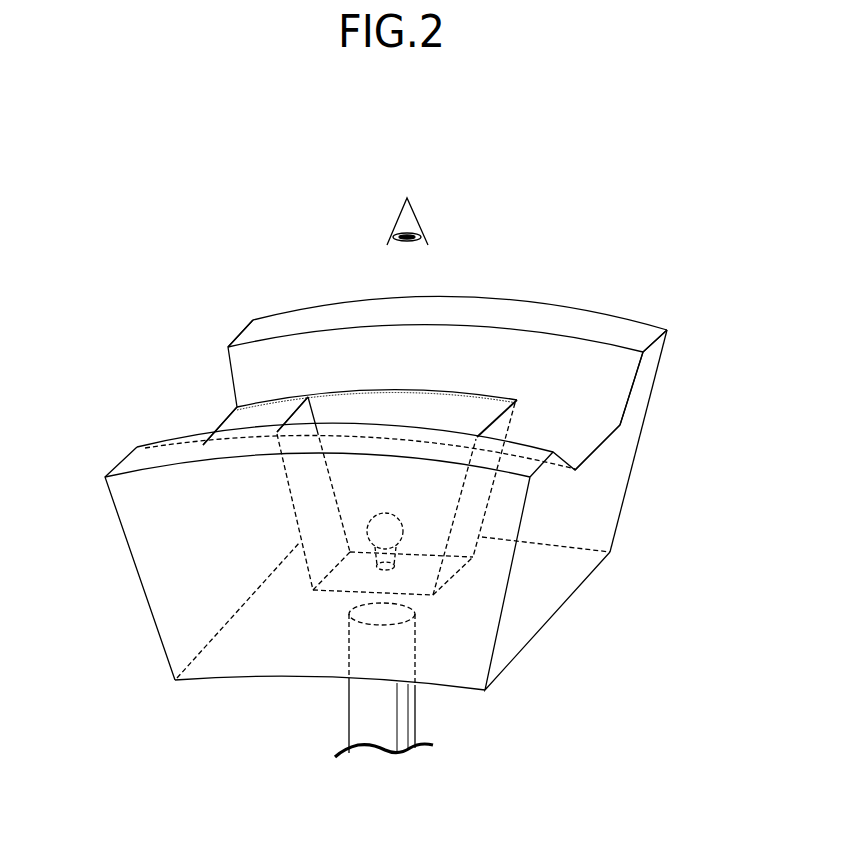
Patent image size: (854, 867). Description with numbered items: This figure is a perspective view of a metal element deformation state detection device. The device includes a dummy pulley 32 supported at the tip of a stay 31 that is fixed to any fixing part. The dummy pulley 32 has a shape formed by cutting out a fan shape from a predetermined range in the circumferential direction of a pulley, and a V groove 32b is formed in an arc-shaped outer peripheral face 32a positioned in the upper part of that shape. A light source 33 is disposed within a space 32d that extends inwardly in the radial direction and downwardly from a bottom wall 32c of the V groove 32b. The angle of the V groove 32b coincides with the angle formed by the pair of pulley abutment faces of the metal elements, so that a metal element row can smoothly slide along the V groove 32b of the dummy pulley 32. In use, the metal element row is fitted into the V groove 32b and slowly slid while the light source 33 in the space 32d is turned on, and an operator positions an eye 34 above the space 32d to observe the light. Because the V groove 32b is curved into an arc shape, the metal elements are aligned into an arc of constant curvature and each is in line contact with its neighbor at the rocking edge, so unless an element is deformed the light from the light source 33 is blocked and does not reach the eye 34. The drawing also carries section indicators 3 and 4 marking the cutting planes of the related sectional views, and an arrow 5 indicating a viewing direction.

The stay 31 is at (358, 703).
The dummy pulley 32 is at (323, 296).
The arc-shaped outer peripheral face 32a is at (166, 452).
The V groove 32b is at (449, 352).
The bottom wall 32c is at (253, 413).
The space 32d is at (378, 412).
The light source 33 is at (386, 522).
The eye 34 is at (399, 220).
The section line 3 is at (151, 415).
The section line 4 is at (502, 267).
The view direction arrow 5 is at (445, 185).